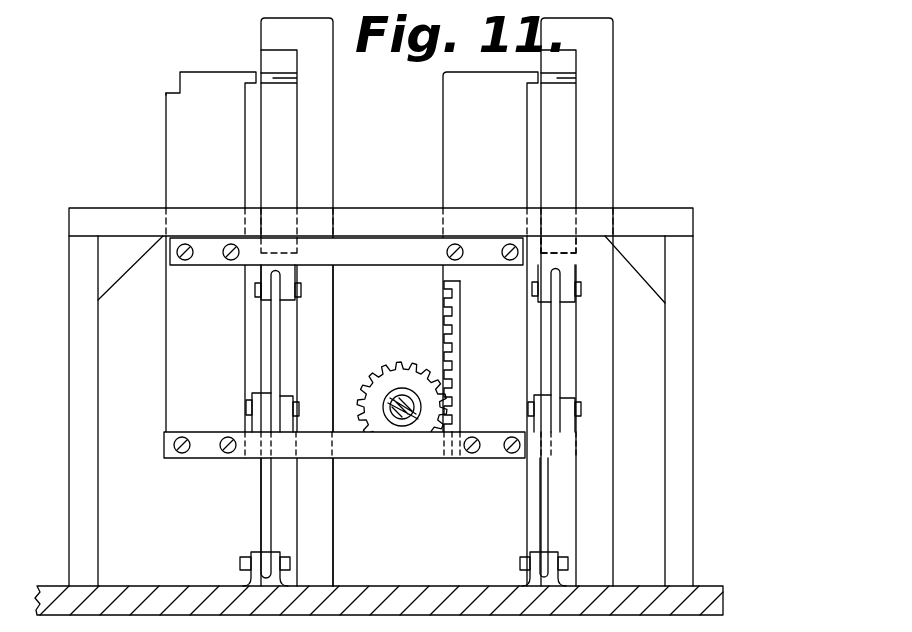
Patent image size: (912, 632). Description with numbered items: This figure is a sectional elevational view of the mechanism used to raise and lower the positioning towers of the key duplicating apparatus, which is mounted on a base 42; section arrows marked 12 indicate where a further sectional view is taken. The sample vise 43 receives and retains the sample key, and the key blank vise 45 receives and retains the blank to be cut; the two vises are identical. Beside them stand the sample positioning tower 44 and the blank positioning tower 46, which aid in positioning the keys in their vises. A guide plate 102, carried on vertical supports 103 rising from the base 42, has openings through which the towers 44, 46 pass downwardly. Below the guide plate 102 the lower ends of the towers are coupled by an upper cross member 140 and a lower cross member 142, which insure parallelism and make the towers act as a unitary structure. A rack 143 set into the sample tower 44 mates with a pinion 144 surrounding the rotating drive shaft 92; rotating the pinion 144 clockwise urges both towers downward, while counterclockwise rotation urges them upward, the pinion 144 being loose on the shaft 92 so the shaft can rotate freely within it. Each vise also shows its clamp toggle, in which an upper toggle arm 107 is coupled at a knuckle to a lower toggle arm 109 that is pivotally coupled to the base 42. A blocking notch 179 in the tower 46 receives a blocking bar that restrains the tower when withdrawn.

The blocking notch 179 is at (160, 79).
The blank positioning tower 46 is at (213, 78).
The key blank vise 45 is at (328, 97).
The sample positioning tower 44 is at (455, 123).
The sample vise 43 is at (614, 72).
The guide plate 102 is at (660, 208).
The vertical supports 103 is at (75, 342).
The cross member 140 is at (370, 247).
The upper toggle arm 107 is at (271, 335).
The pinion 144 is at (390, 362).
The drive shaft 92 is at (383, 398).
The rack 143 is at (455, 445).
The cross member 142 is at (360, 455).
The lower toggle arm 109 is at (261, 488).
The base 42 is at (714, 586).
The section line 12- 12 is at (402, 348).